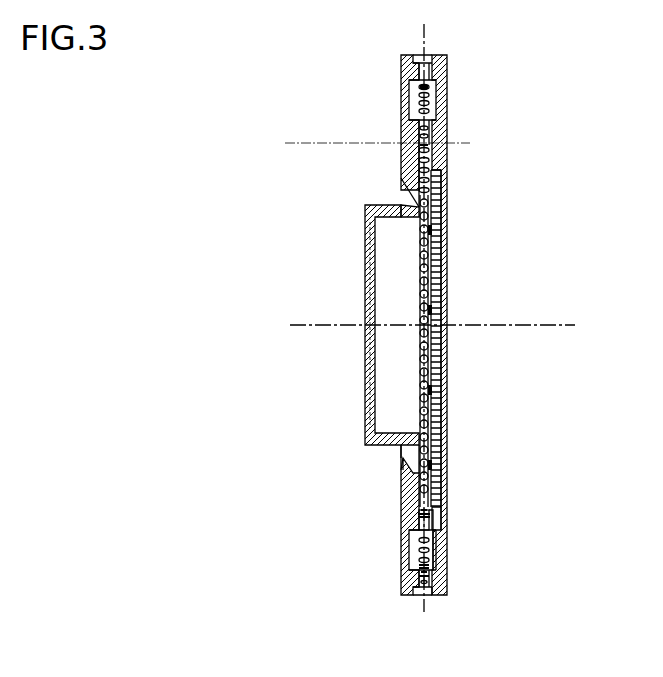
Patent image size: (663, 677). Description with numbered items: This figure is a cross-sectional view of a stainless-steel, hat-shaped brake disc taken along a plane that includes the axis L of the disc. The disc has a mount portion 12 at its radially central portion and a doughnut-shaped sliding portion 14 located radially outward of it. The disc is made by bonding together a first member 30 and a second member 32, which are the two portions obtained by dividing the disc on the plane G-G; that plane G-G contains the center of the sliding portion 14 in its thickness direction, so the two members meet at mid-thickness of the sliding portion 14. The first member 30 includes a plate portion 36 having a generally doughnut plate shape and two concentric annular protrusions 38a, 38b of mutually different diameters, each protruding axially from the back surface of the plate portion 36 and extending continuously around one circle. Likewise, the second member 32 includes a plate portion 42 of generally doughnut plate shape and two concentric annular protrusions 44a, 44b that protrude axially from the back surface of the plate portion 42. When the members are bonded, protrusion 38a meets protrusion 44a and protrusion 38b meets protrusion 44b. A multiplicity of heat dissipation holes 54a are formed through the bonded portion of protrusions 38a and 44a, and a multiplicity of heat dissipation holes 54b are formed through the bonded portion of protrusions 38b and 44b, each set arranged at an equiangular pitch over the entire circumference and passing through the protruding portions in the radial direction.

The mount portion 12 is at (350, 413).
The sliding portion 14 is at (378, 142).
The first member 30 is at (393, 88).
The second member 32 is at (461, 96).
The plate portion 36 is at (412, 492).
The annular protrusion 38a is at (412, 583).
The annular protrusion 38b is at (412, 523).
The plate portion 42 is at (450, 488).
The annular protrusion 44a is at (448, 580).
The annular protrusion 44b is at (448, 520).
The heat dissipation holes 54a is at (448, 550).
The heat dissipation holes 54b is at (412, 542).
The plane G- G is at (432, 324).
The axis L is at (551, 325).